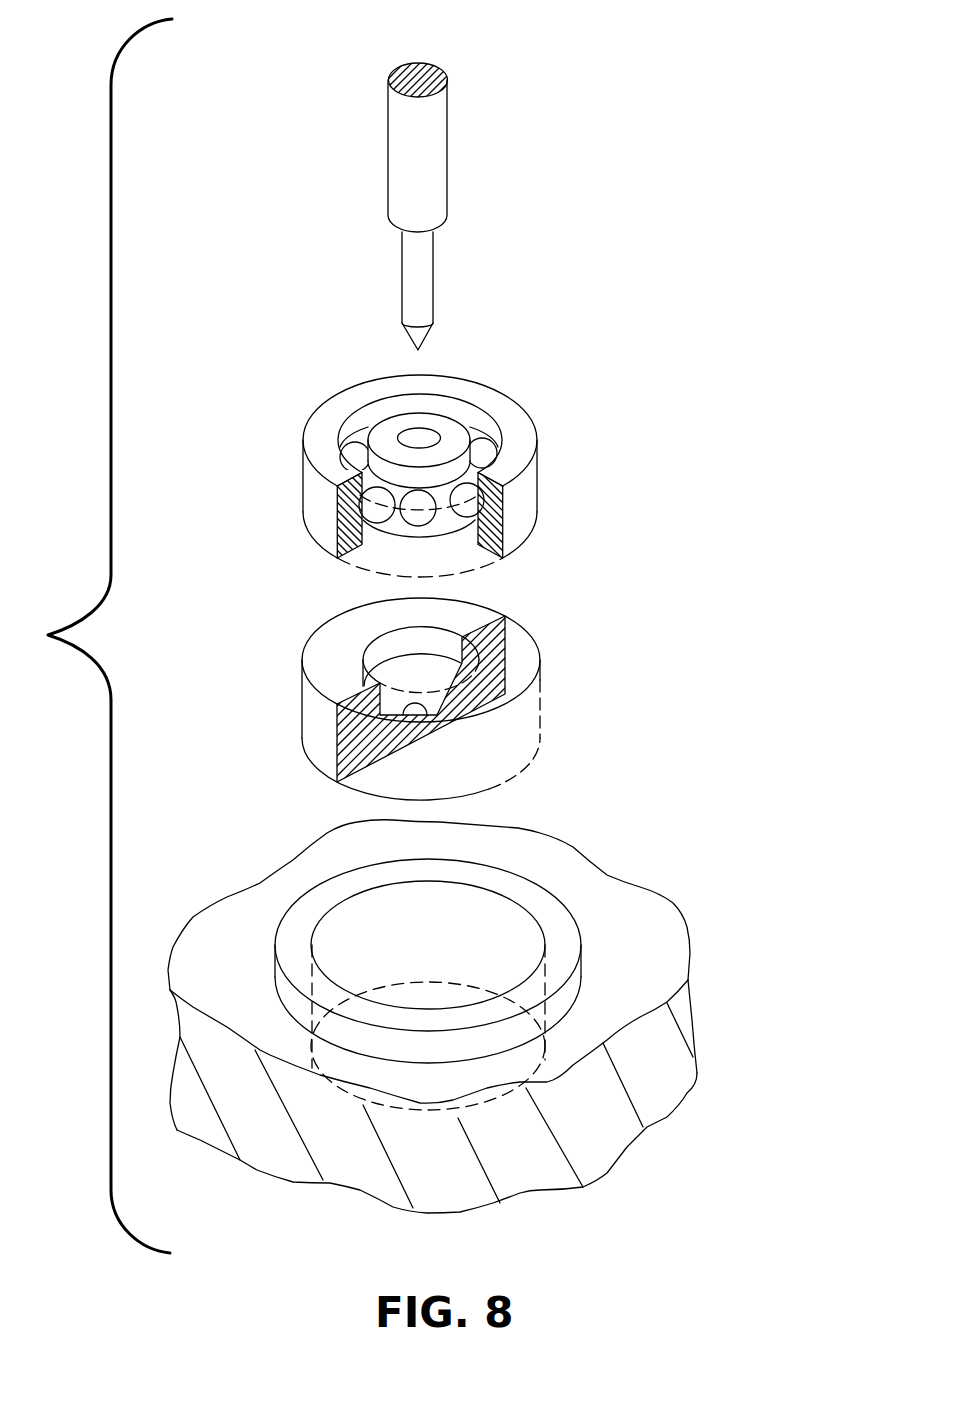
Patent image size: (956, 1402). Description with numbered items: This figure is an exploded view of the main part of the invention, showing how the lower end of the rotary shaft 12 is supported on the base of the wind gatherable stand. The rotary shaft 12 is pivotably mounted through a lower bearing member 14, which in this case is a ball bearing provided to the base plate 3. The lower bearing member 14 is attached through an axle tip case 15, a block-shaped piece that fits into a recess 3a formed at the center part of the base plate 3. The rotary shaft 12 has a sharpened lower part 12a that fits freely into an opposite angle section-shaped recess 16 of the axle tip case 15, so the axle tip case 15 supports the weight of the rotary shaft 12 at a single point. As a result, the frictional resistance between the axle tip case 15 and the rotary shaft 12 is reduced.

The rotary shaft 12 is at (433, 149).
The sharpened lower part 12a is at (428, 307).
The lower bearing member 14 is at (513, 418).
The axle tip case 15 is at (315, 761).
The recess 16 is at (433, 727).
The base plate 3 is at (597, 883).
The recess 3a is at (458, 903).